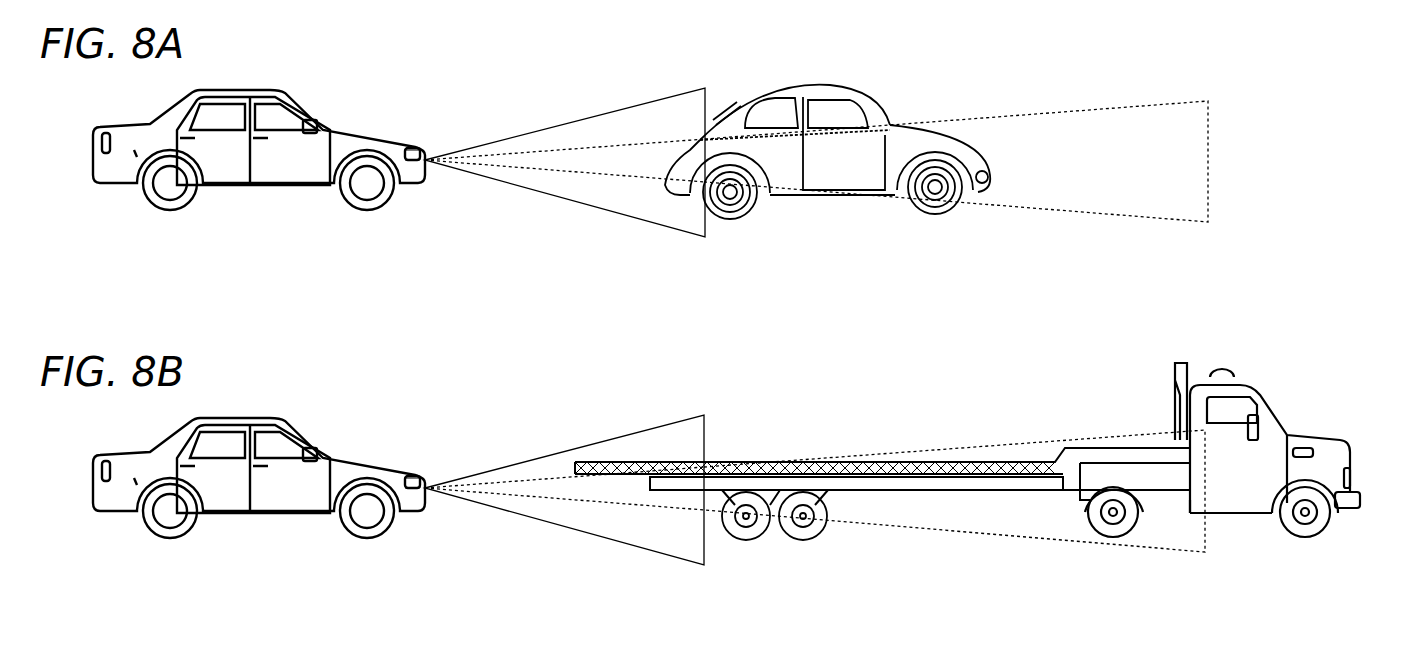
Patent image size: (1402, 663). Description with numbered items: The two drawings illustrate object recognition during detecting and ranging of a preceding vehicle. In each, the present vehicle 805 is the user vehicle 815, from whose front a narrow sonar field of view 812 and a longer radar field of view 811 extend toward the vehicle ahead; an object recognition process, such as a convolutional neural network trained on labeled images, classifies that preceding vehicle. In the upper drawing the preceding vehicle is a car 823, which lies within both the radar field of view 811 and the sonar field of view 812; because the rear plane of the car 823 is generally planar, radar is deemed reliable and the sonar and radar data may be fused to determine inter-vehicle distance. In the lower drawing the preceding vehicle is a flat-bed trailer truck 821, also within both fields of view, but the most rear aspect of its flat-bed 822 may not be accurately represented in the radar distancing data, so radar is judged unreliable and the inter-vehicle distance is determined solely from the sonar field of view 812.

In FIG. 8A, the present vehicle 805 is at (268, 58).
In FIG. 8B, the present vehicle 805 is at (268, 386).
In FIG. 8A, the user vehicle 815 is at (335, 86).
In FIG. 8B, the user vehicle 815 is at (337, 412).
In FIG. 8A, the sonar field of view 812 is at (584, 104).
In FIG. 8B, the sonar field of view 812 is at (584, 432).
In FIG. 8A, the radar field of view 811 is at (1215, 84).
In FIG. 8B, the radar field of view 811 is at (983, 434).
In FIG. 8A, the car 823 is at (892, 66).
In FIG. 8B, the flat-bed 822 is at (725, 450).
In FIG. 8B, the flat-bed trailer truck 821 is at (1262, 362).